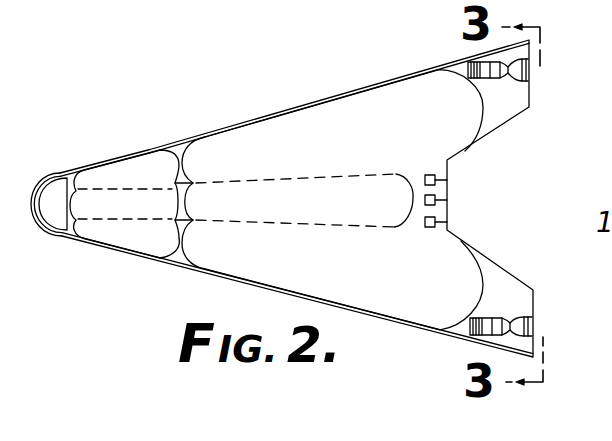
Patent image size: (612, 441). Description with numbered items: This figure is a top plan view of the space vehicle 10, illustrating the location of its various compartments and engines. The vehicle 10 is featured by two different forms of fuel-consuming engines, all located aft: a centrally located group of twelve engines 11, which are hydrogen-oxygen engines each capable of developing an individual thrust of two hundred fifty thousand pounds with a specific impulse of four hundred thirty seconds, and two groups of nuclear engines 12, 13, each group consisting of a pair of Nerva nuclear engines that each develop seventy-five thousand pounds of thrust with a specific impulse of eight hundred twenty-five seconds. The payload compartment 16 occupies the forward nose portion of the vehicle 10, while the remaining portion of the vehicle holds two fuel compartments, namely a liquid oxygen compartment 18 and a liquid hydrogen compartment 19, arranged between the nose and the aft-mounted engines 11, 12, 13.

The space vehicle 10 is at (265, 114).
The engines 11 is at (450, 222).
The nuclear engines 12 is at (522, 70).
The nuclear engines 13 is at (526, 326).
The payload compartment 16 is at (52, 188).
The liquid oxygen compartment 18 is at (135, 163).
The liquid hydrogen compartment 19 is at (345, 107).